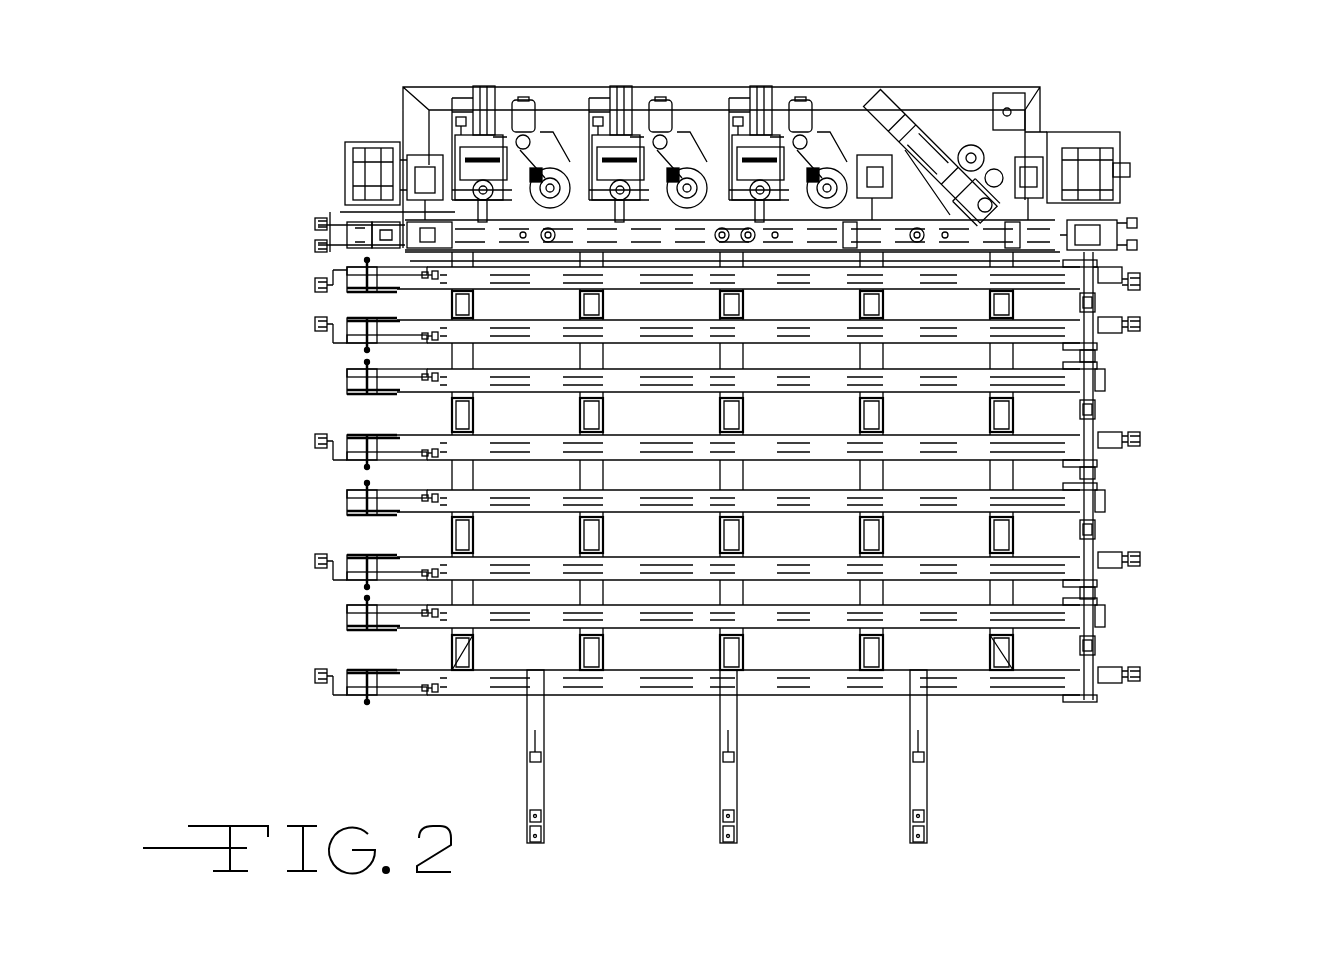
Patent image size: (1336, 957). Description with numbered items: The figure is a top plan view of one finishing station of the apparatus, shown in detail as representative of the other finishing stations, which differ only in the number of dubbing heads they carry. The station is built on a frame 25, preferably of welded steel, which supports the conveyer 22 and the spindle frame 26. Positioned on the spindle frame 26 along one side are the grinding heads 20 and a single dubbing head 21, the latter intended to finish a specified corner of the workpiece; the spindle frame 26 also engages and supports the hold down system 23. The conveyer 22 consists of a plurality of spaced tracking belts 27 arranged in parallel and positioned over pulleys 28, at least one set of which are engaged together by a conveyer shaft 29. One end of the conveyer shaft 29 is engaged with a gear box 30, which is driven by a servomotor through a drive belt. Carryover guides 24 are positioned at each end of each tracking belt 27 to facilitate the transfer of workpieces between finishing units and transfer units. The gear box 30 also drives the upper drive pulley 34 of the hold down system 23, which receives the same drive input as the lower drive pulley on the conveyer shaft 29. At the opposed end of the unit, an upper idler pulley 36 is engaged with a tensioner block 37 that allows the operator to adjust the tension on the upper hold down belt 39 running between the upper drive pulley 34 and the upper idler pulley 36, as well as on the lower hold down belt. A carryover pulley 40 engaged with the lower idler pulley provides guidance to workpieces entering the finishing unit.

The grinding heads 20 is at (850, 195).
The dubbing head 21 is at (985, 135).
The conveyer 22 is at (1112, 525).
The hold down system 23 is at (1160, 255).
The carryover guides 24 is at (313, 680).
The frame 25 is at (1040, 403).
The spindle frame 26 is at (922, 97).
The tracking belts 27 is at (682, 623).
The pulleys 28 is at (345, 633).
The conveyer shaft 29 is at (1090, 655).
The gear box 30 is at (1107, 165).
The upper drive pulley 34 is at (1090, 222).
The upper idler pulley 36 is at (330, 235).
The tensioner block 37 is at (360, 148).
The upper hold down belt 39 is at (345, 262).
The carryover pulley 40 is at (320, 237).